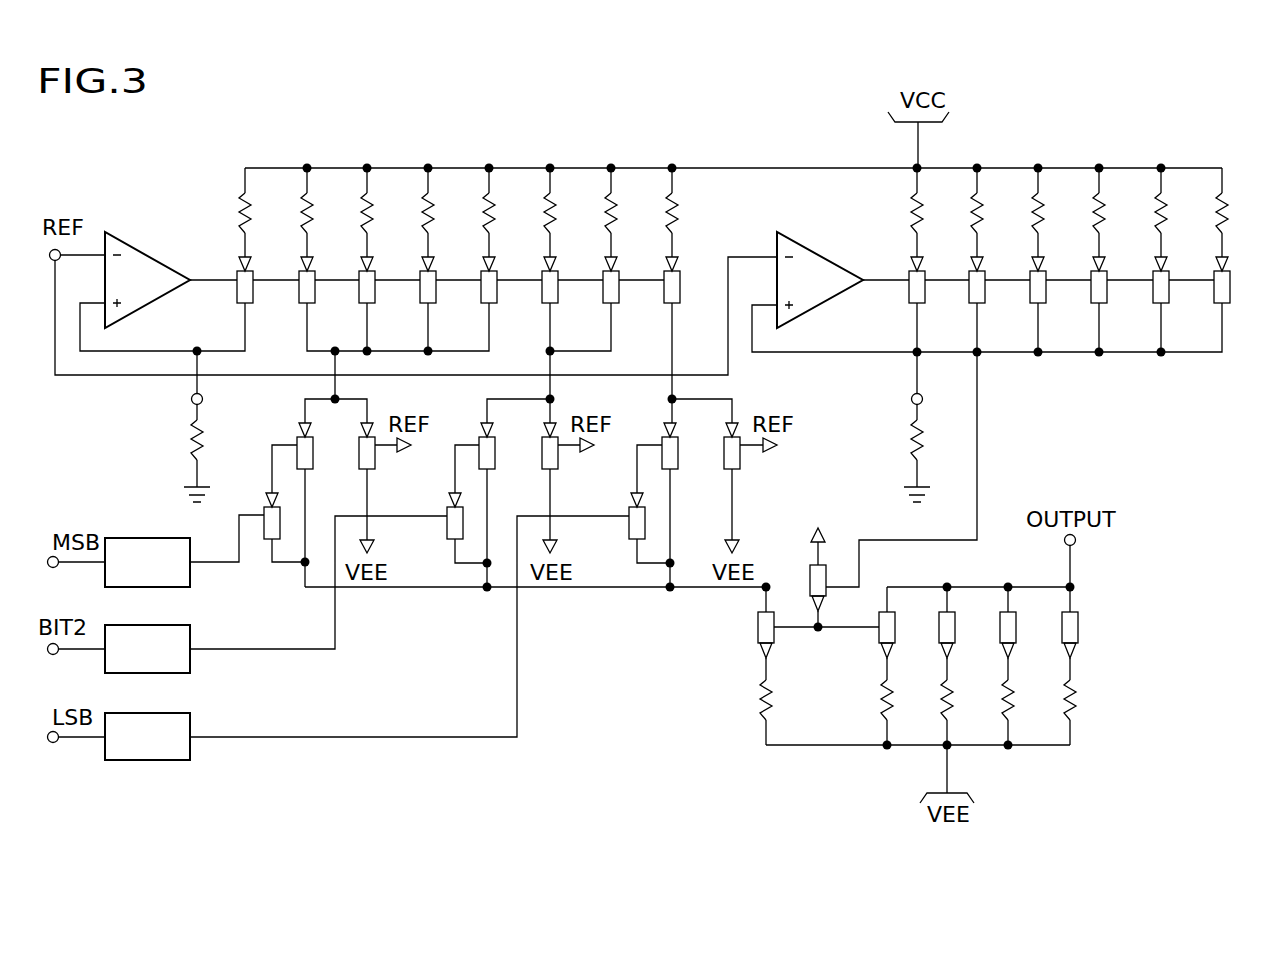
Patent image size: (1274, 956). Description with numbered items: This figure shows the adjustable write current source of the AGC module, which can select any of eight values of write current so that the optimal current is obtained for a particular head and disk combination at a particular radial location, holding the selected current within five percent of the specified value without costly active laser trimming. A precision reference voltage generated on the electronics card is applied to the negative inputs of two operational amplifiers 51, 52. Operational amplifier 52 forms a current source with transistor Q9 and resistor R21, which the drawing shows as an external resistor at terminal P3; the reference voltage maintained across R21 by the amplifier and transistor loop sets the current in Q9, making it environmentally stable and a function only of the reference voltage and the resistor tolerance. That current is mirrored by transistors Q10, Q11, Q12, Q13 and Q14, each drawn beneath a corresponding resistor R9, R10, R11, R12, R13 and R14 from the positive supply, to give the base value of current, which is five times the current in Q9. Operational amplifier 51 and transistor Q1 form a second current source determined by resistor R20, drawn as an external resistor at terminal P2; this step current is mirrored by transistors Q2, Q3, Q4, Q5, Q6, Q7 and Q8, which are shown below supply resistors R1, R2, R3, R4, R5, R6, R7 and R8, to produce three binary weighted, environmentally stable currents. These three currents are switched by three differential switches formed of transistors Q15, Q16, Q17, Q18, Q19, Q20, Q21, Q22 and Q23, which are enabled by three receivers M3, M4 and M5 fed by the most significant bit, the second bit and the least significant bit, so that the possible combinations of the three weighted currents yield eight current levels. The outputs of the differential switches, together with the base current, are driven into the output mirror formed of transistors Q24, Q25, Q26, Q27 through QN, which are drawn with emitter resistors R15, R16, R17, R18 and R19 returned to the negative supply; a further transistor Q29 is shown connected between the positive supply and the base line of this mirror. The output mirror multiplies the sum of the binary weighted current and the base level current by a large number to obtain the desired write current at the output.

The operational amplifier 51 is at (147, 250).
The operational amplifier 52 is at (821, 250).
The resistor R1 is at (261, 212).
The resistor R2 is at (323, 212).
The resistor R3 is at (383, 212).
The resistor R4 is at (444, 212).
The resistor R5 is at (505, 212).
The resistor R6 is at (566, 212).
The resistor R7 is at (627, 212).
The resistor R8 is at (688, 212).
The resistor R9 is at (933, 212).
The resistor R10 is at (998, 212).
The resistor R11 is at (1059, 212).
The resistor R12 is at (1120, 212).
The resistor R13 is at (1182, 212).
The resistor R14 is at (1243, 212).
The resistor R15 is at (787, 712).
The resistor R16 is at (907, 712).
The resistor R17 is at (967, 712).
The resistor R18 is at (1028, 712).
The resistor R19 is at (1089, 712).
The resistor R20 is at (175, 453).
The resistor R21 is at (896, 453).
The transistor Q1 is at (261, 295).
The transistor Q2 is at (323, 295).
The transistor Q3 is at (383, 295).
The transistor Q4 is at (444, 295).
The transistor Q5 is at (505, 295).
The transistor Q6 is at (566, 295).
The transistor Q7 is at (627, 295).
The transistor Q8 is at (688, 295).
The transistor Q9 is at (933, 295).
The transistor Q10 is at (998, 295).
The transistor Q11 is at (1059, 295).
The transistor Q12 is at (1120, 295).
The transistor Q13 is at (1182, 295).
The transistor Q14 is at (1243, 295).
The transistor Q15 is at (250, 523).
The transistor Q16 is at (312, 505).
The transistor Q17 is at (387, 488).
The transistor Q18 is at (341, 571).
The transistor Q19 is at (495, 505).
The transistor Q20 is at (569, 488).
The transistor Q21 is at (432, 615).
The transistor Q22 is at (678, 505).
The transistor Q23 is at (751, 488).
The transistor Q24 is at (818, 636).
The transistor Q25 is at (907, 636).
The transistor Q26 is at (967, 636).
The transistor Q27 is at (1028, 636).
The transistor QN is at (1085, 615).
The current source transistor Q29 is at (834, 566).
The receiver M3 is at (119, 562).
The receiver M4 is at (119, 649).
The receiver M5 is at (119, 736).
The external terminal P2 is at (180, 381).
The external terminal P3 is at (901, 398).